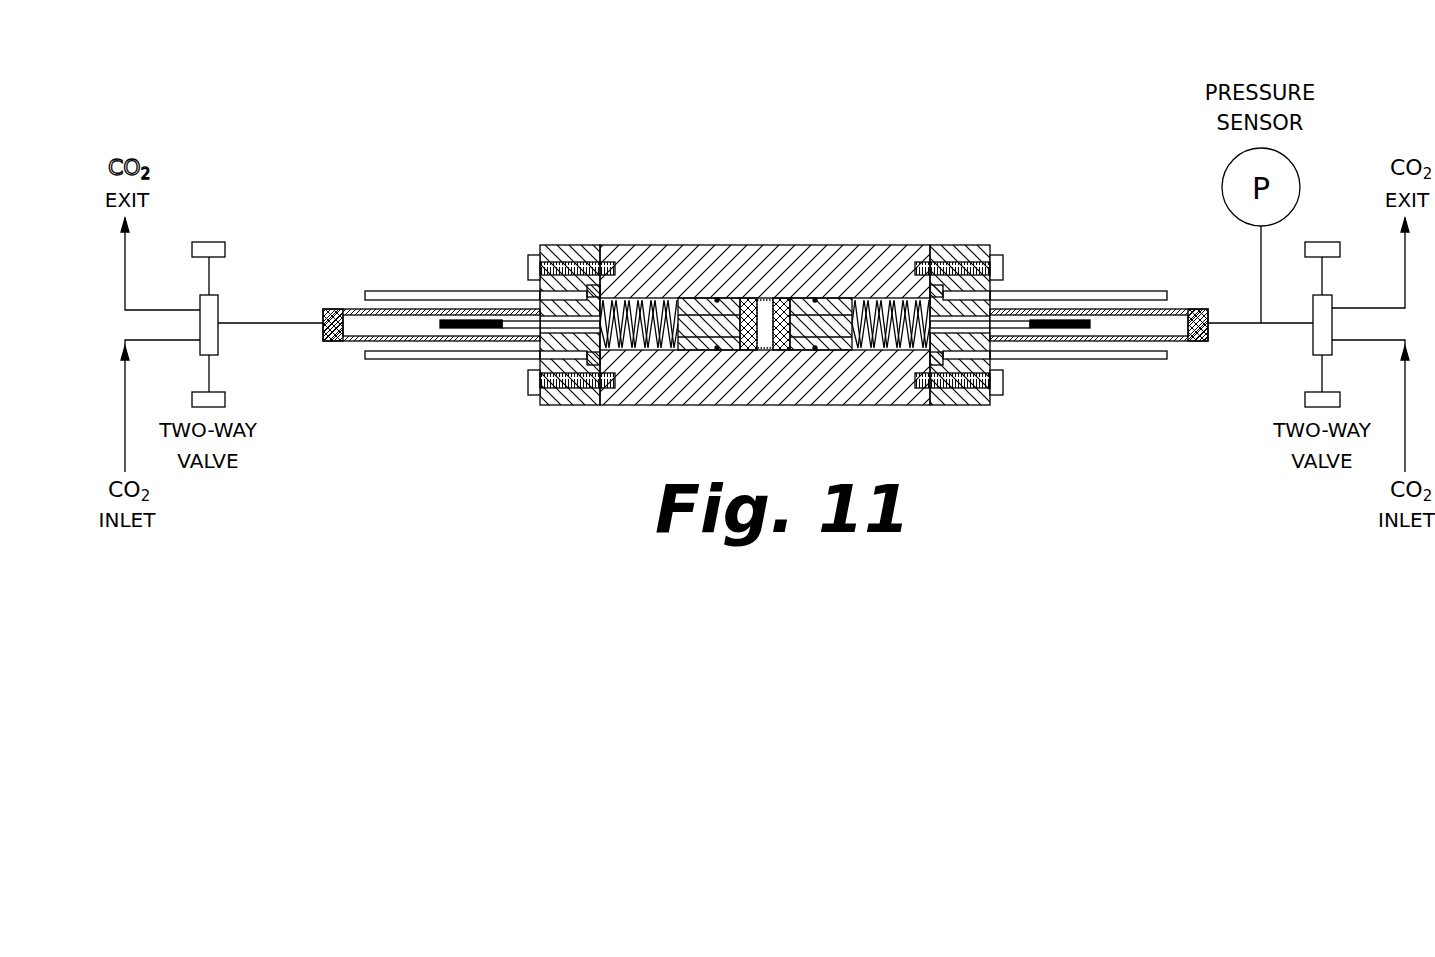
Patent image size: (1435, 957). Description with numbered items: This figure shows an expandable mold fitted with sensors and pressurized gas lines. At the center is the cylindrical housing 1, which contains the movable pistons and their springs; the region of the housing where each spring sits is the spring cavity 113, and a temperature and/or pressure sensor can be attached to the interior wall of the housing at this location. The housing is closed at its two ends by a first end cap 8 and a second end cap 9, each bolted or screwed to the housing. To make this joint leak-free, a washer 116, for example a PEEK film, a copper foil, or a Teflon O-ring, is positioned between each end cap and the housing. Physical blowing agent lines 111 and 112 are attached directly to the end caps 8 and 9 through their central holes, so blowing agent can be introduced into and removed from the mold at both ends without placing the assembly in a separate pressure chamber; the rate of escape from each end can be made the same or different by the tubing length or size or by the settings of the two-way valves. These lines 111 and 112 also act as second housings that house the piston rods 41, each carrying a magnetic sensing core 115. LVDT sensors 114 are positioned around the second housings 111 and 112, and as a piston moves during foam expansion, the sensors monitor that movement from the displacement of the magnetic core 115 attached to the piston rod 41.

The housing 1 is at (736, 258).
The first end cap 8 is at (570, 255).
The second end cap 9 is at (962, 255).
The piston rod 41 is at (510, 334).
The physical blowing agent line 111 is at (338, 305).
The physical blowing agent line 112 is at (1198, 306).
The spring cavity 113 is at (888, 296).
The LVDT sensor 114 is at (410, 291).
The magnetic sensing core 115 is at (457, 334).
The washer 116 is at (597, 358).